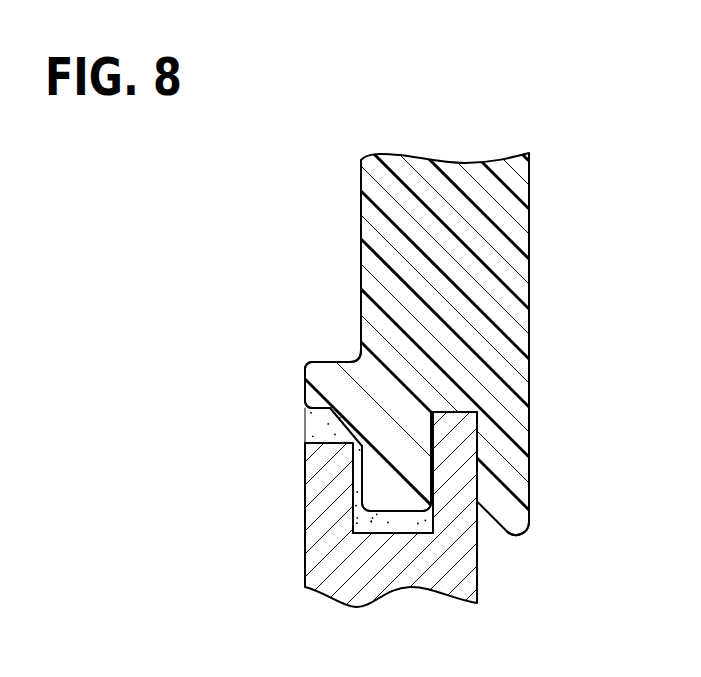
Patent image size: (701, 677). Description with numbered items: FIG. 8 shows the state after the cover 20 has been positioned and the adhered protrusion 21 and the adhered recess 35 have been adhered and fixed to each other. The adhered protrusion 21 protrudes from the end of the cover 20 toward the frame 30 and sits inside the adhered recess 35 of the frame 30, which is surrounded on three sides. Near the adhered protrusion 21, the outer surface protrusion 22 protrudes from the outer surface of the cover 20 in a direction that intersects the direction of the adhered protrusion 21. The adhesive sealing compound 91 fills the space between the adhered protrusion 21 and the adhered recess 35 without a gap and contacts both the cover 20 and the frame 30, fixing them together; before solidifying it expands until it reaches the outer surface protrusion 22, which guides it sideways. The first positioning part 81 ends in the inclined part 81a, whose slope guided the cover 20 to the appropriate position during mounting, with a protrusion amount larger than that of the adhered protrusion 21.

The cover 20 is at (378, 237).
The adhered protrusion 21 is at (390, 483).
The outer surface protrusion 22 is at (327, 378).
The frame 30 is at (332, 563).
The adhered recess 35 is at (402, 533).
The first positioning part 81 is at (529, 452).
The inclined part 81a is at (493, 528).
The adhesive sealing compound 91 is at (325, 421).